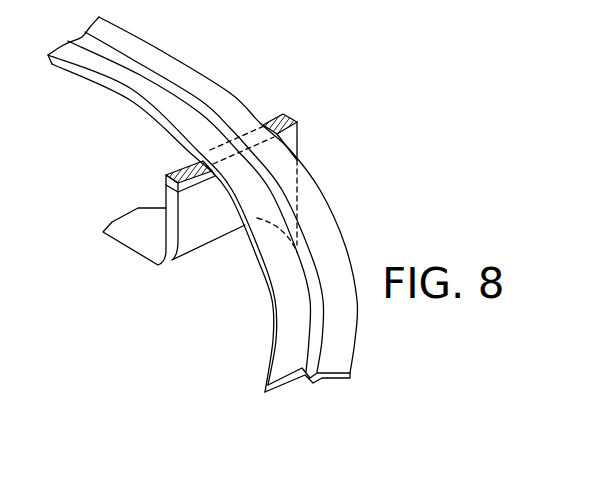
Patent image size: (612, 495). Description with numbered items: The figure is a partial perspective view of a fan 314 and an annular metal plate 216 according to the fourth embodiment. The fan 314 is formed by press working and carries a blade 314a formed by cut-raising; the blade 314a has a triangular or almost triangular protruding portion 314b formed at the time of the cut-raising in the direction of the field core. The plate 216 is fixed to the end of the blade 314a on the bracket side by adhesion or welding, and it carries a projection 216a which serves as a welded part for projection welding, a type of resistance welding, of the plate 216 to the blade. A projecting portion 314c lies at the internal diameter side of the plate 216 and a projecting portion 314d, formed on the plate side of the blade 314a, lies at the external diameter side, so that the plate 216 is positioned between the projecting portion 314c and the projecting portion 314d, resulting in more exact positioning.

The annular metal plate 216 is at (212, 82).
The projection 216a is at (327, 378).
The fan 314 is at (133, 230).
The blade 314a is at (298, 143).
The protruding portion 314b is at (255, 220).
The projecting portion 314c is at (167, 175).
The projecting portion 314d is at (293, 120).